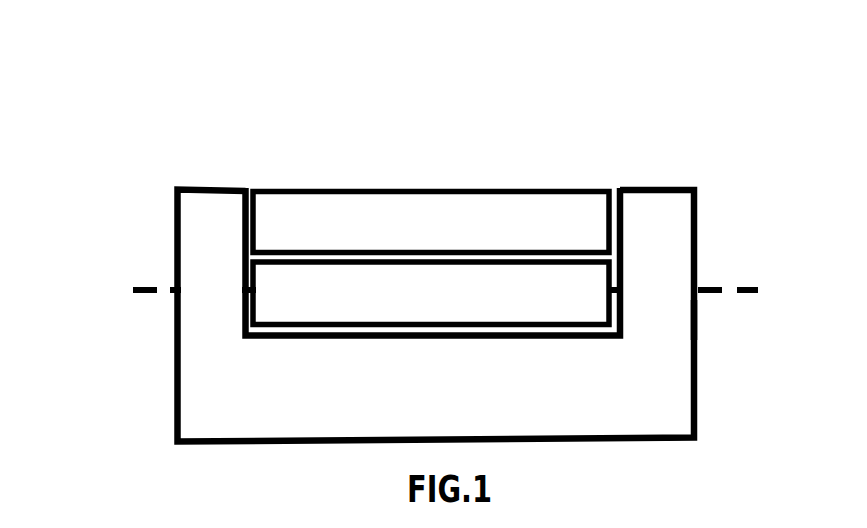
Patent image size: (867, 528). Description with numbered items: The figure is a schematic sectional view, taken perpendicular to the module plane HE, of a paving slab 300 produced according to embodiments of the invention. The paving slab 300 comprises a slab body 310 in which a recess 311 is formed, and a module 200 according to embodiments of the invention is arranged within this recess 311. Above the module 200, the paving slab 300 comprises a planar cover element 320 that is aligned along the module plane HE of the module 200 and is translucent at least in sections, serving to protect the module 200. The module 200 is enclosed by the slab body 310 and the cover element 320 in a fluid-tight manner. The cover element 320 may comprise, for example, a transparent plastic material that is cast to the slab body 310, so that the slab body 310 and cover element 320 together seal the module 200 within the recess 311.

The paving slab 300 is at (110, 49).
The slab body 310 is at (356, 316).
The recess 311 is at (433, 206).
The cover element 320 is at (431, 210).
The module 200 is at (748, 320).
The module plane HE is at (451, 273).